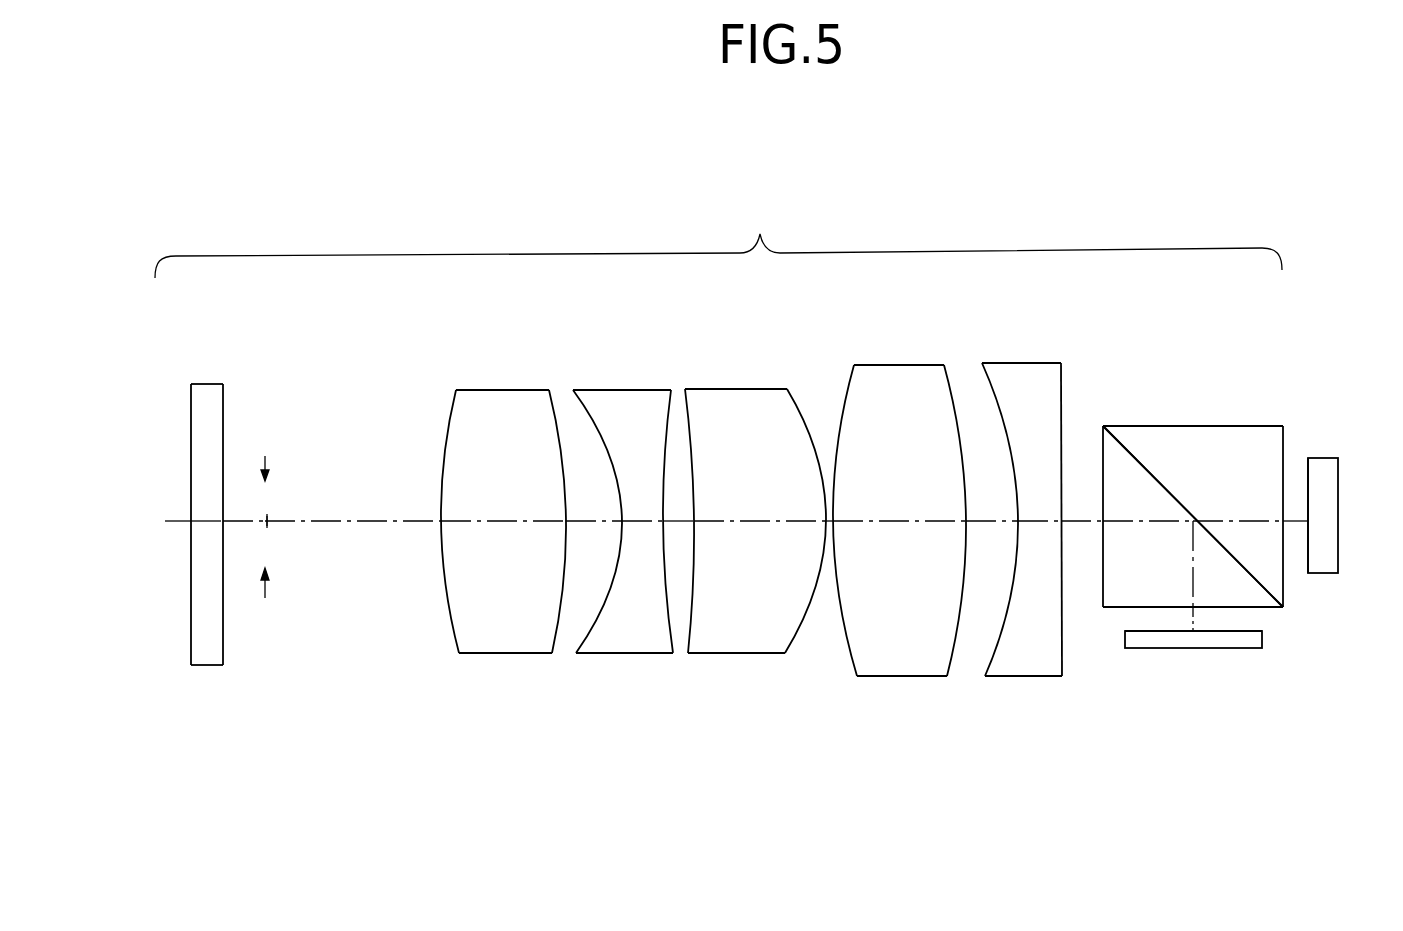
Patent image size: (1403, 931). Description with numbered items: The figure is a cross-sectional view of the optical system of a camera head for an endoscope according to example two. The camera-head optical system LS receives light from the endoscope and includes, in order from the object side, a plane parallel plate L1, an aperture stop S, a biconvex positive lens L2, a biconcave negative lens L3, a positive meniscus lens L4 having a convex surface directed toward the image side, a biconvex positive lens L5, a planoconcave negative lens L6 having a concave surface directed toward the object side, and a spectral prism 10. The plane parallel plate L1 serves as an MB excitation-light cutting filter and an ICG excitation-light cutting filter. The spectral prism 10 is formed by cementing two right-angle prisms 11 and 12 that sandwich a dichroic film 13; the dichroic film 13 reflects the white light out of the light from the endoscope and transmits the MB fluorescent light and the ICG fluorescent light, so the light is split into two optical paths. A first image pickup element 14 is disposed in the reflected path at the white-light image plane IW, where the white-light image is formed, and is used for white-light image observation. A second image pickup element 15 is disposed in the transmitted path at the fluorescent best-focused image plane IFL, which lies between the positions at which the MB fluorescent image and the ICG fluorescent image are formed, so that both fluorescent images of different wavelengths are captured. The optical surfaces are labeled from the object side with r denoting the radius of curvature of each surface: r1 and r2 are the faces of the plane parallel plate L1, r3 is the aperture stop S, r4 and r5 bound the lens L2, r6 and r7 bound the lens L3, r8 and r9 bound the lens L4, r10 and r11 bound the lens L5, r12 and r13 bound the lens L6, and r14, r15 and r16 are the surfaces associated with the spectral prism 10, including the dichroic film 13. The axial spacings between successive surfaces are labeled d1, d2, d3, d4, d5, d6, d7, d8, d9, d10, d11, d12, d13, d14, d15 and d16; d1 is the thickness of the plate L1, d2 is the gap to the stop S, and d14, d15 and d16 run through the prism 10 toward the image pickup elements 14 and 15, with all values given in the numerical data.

The camera-head optical system LS is at (718, 241).
The spectral prism 10 is at (1292, 331).
The right-angle prism 11 is at (1228, 426).
The right-angle prism 12 is at (1103, 595).
The dichroic film 13 is at (1155, 475).
The first image pickup element 14 is at (1165, 648).
The second image pickup element 15 is at (1328, 487).
The white-light image plane IW is at (1142, 630).
The fluorescent best-focused image plane IFL is at (1307, 477).
The aperture stop S is at (264, 458).
The plane parallel plate L1 is at (208, 384).
The biconvex positive lens L2 is at (502, 390).
The biconcave negative lens L3 is at (622, 390).
The positive meniscus lens L4 is at (740, 389).
The biconvex positive lens L5 is at (893, 365).
The planoconcave negative lens L6 is at (1030, 363).
The lens surface radius of curvature r1 is at (191, 415).
The lens surface radius of curvature r2 is at (223, 415).
The lens surface radius of curvature r3 is at (265, 439).
The lens surface radius of curvature r4 is at (449, 420).
The lens surface radius of curvature r5 is at (550, 407).
The lens surface radius of curvature r6 is at (580, 408).
The lens surface radius of curvature r7 is at (669, 407).
The lens surface radius of curvature r8 is at (690, 446).
The lens surface radius of curvature r9 is at (794, 400).
The lens surface radius of curvature r10 is at (848, 381).
The lens surface radius of curvature r11 is at (948, 382).
The lens surface radius of curvature r12 is at (984, 374).
The lens surface radius of curvature r13 is at (1062, 372).
The lens surface radius of curvature r14 is at (1103, 453).
The lens surface radius of curvature r15 is at (1128, 451).
The lens surface radius of curvature r16 is at (1283, 447).
The distance between lens surfaces d1 is at (207, 525).
The distance between lens surfaces d2 is at (245, 525).
The distance between lens surfaces d3 is at (350, 525).
The distance between lens surfaces d4 is at (498, 525).
The distance between lens surfaces d5 is at (598, 525).
The distance between lens surfaces d6 is at (647, 525).
The distance between lens surfaces d7 is at (680, 525).
The distance between lens surfaces d8 is at (750, 525).
The distance between lens surfaces d9 is at (810, 525).
The distance between lens surfaces d10 is at (912, 525).
The distance between lens surfaces d11 is at (992, 525).
The distance between lens surfaces d12 is at (1042, 525).
The distance between lens surfaces d13 is at (1080, 525).
The distance between lens surfaces d14 is at (1147, 525).
The distance between lens surfaces d15 is at (1293, 525).
The distance between lens surfaces d16 is at (1290, 578).